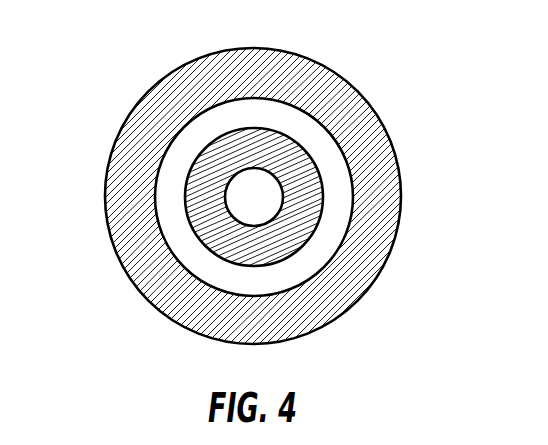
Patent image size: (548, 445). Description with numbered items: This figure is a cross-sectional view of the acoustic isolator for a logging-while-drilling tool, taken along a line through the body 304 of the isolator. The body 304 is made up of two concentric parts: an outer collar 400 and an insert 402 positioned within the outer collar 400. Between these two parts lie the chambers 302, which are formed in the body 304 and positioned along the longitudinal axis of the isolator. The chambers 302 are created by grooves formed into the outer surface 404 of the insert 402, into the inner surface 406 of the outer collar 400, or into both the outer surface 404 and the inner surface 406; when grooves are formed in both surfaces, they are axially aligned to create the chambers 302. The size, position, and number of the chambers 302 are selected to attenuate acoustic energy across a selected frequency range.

The outer collar 400 is at (345, 313).
The chambers 302 is at (227, 278).
The body 304 is at (186, 62).
The inner surface 406 is at (255, 102).
The outer surface 404 is at (185, 202).
The insert 402 is at (322, 198).